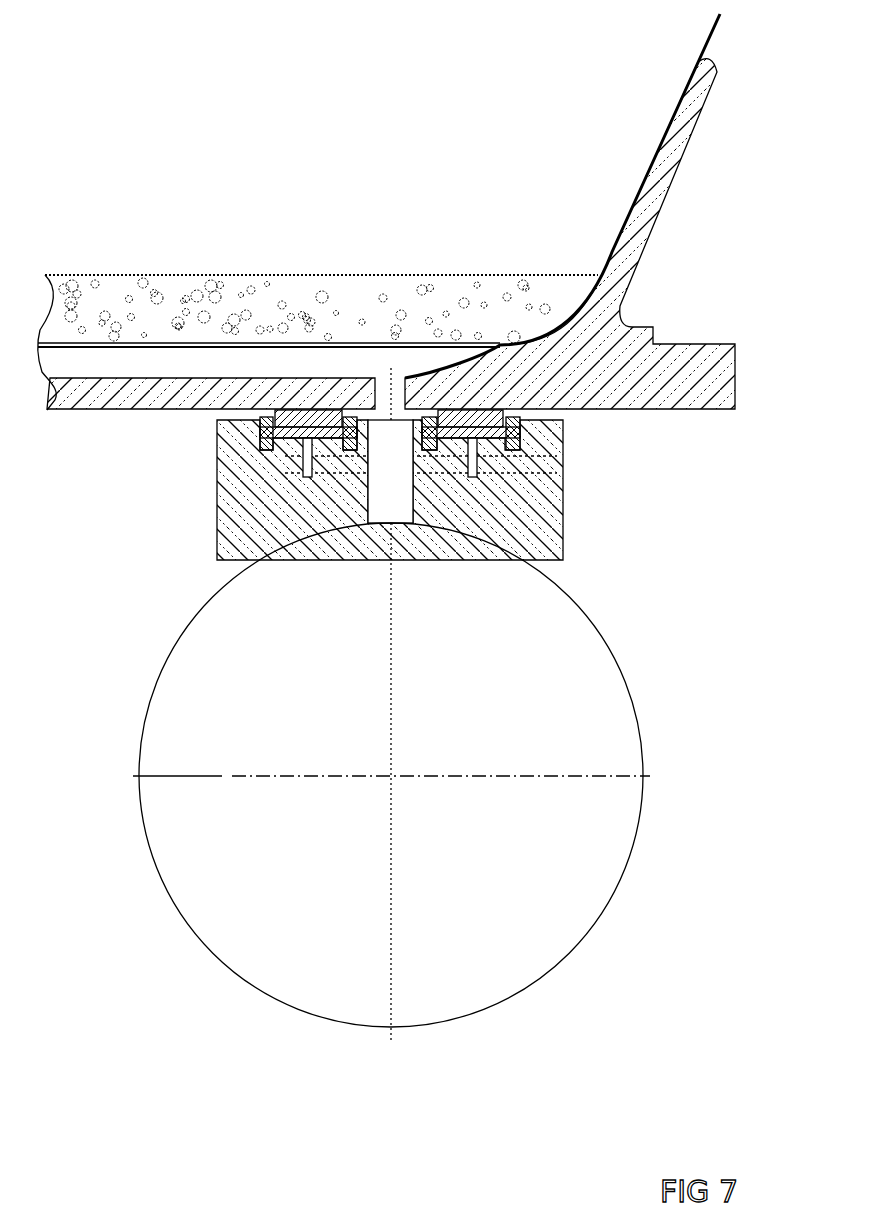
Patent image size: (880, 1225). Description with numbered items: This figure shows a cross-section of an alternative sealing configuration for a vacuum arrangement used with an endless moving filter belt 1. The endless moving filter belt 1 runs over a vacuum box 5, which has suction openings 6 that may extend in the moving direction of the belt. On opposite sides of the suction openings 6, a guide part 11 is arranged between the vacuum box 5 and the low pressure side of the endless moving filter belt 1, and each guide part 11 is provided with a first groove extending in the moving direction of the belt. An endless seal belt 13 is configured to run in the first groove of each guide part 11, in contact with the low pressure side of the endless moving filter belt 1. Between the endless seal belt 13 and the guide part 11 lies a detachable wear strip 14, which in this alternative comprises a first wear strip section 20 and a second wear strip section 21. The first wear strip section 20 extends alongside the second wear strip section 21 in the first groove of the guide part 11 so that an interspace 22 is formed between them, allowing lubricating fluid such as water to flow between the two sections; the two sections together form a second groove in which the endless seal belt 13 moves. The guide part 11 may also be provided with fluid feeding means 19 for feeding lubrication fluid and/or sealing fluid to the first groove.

The endless moving filter belt 1 is at (707, 357).
The vacuum box 5 is at (600, 634).
The suction openings 6 is at (390, 495).
The guide part 11 is at (555, 515).
The endless seal belt 13 is at (302, 424).
The detachable wear strip 14 is at (520, 423).
The fluid feeding means 19 is at (553, 463).
The first wear strip section 20 is at (268, 446).
The second wear strip section 21 is at (302, 437).
The interspace 22 is at (347, 447).